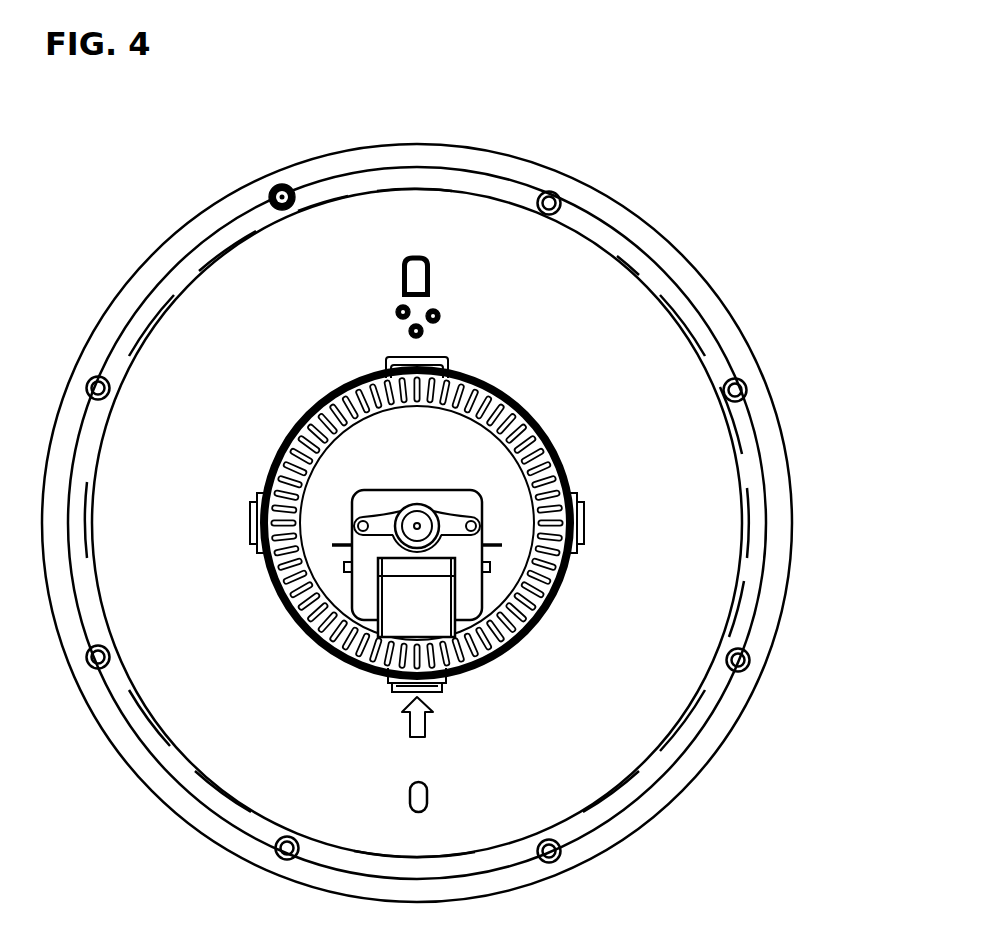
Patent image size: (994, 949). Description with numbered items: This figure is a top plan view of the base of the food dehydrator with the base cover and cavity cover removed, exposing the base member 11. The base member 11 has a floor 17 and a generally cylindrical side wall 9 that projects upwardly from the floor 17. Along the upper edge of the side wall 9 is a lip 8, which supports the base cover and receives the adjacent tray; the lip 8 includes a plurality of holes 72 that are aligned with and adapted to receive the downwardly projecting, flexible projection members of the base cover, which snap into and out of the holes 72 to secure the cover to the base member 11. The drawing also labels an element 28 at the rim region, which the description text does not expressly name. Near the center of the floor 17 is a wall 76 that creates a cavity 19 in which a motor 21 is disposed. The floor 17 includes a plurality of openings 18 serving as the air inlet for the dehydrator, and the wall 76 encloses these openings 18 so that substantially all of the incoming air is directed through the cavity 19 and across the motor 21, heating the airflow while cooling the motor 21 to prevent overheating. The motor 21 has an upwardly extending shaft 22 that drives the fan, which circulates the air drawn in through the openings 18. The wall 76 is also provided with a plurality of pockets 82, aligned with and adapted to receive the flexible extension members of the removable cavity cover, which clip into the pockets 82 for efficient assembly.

The base member 11 is at (665, 108).
The lip 8 is at (768, 616).
The side wall 9 is at (690, 713).
The floor 17 is at (650, 362).
The flange 28 is at (778, 494).
The holes 72 is at (90, 667).
The wall 76 is at (505, 392).
The openings 18 is at (337, 652).
The cavity 19 is at (430, 446).
The motor 21 is at (375, 495).
The shaft 22 is at (418, 524).
The pockets 82 is at (577, 550).